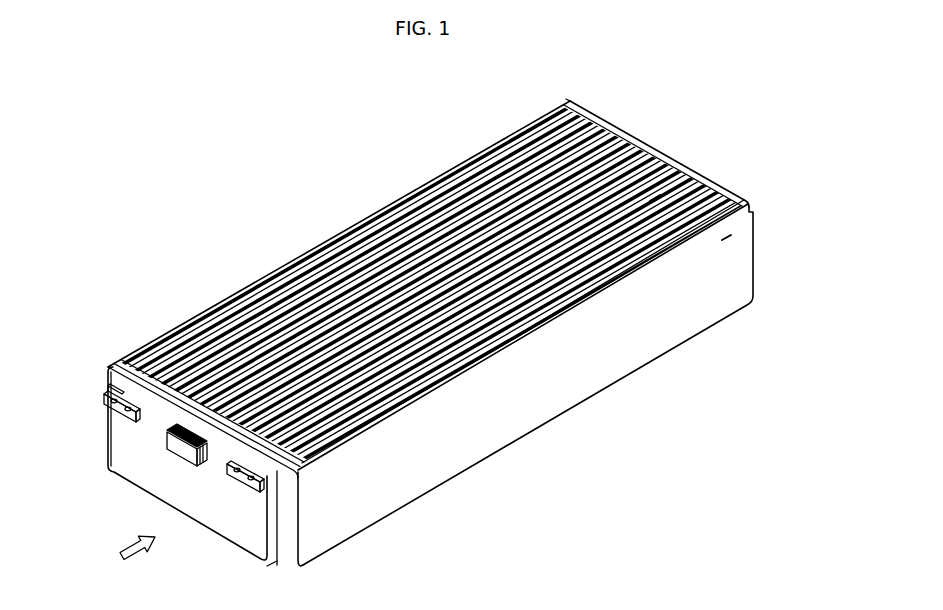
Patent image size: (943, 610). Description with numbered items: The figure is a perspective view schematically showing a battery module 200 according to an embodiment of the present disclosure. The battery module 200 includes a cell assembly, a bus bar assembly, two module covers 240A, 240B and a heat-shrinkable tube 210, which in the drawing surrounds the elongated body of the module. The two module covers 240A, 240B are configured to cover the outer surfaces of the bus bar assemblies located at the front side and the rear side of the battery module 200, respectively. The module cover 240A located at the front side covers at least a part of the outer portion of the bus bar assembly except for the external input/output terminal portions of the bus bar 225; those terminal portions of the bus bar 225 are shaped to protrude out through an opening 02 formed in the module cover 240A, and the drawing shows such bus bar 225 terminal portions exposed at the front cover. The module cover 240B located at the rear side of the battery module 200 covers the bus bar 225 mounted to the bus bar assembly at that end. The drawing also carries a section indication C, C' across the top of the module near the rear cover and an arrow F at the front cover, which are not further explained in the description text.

The battery module 200 is at (231, 91).
The heat-shrinkable tube 210 is at (290, 242).
The module cover 240A is at (130, 466).
The module cover 240B is at (617, 113).
The bus bar 225 is at (106, 405).
The opening 02 is at (106, 398).
The section line C is at (762, 213).
The section line C' is at (694, 175).
The force direction arrow F is at (130, 547).